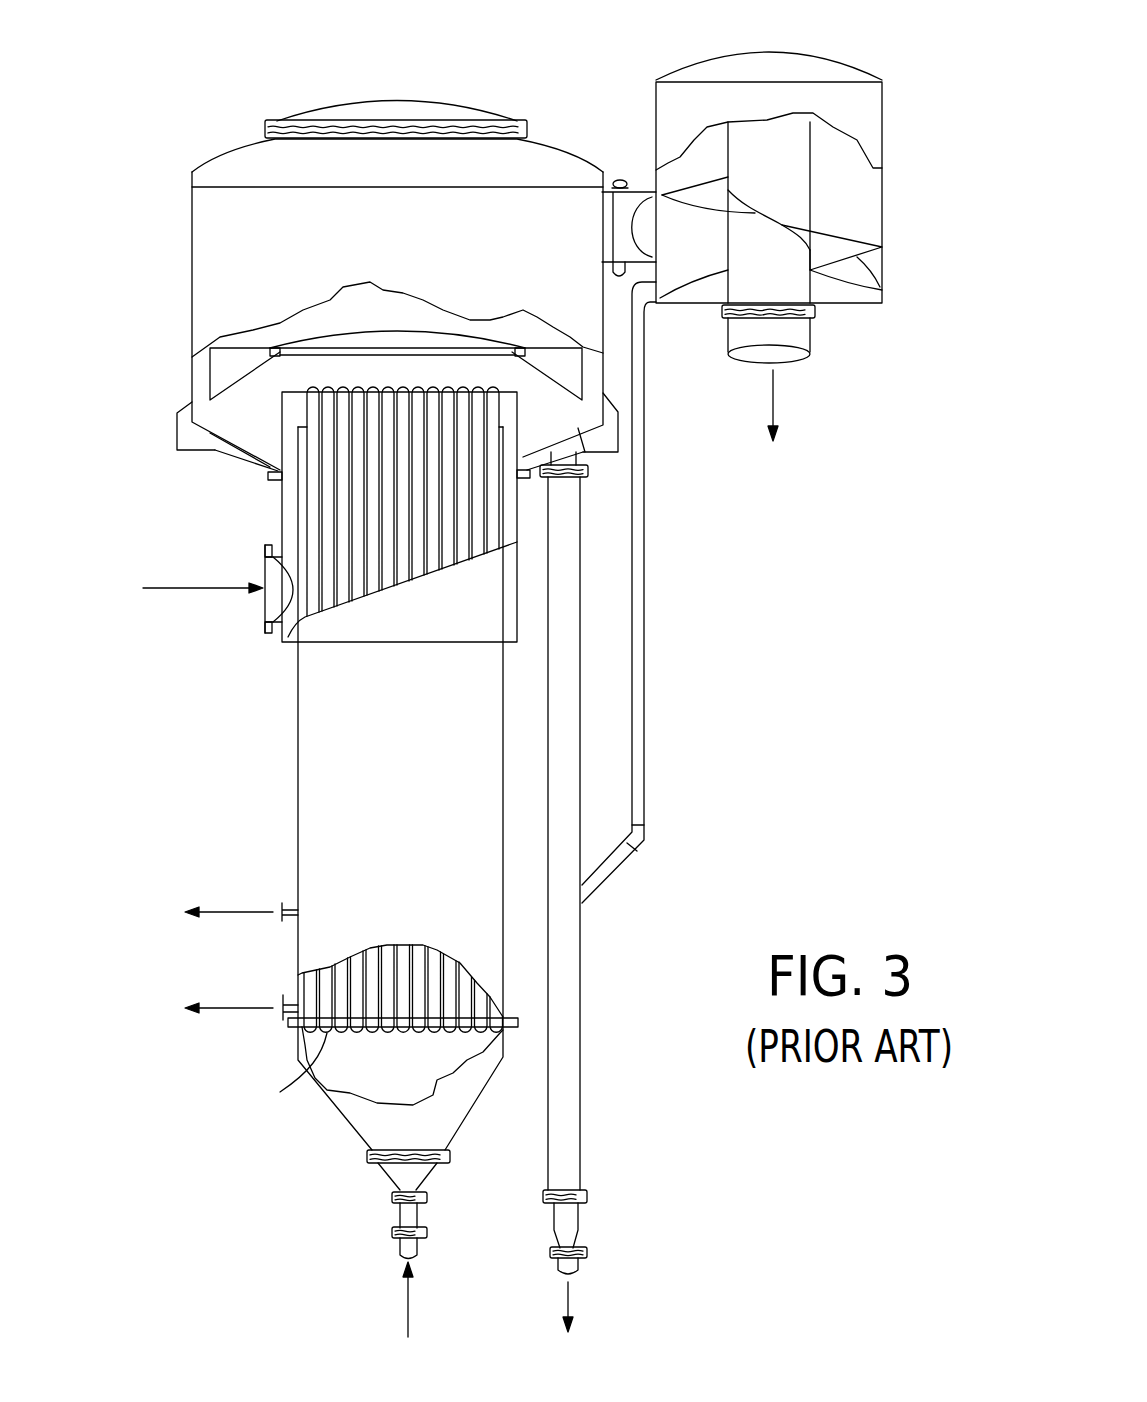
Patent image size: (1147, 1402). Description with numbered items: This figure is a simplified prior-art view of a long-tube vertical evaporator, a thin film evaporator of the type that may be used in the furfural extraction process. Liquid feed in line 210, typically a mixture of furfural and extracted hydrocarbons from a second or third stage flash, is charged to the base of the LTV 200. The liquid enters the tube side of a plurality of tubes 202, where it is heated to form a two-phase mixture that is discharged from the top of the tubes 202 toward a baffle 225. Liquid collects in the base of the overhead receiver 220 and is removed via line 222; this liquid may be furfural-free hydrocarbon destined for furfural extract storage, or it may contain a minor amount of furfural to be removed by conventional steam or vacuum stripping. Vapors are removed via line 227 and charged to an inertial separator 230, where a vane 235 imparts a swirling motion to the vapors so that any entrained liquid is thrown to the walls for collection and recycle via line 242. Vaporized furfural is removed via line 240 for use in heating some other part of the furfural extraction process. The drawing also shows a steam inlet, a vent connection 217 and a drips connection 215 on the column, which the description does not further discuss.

The long-tube vertical evaporator 200 is at (298, 822).
The tubes 202 is at (375, 1030).
The liquid feed line 210 is at (212, 590).
The drips outlet 215 is at (227, 1010).
The vent 217 is at (227, 913).
The overhead receiver 220 is at (192, 258).
The liquid removal line 222 is at (582, 665).
The baffle 225 is at (418, 333).
The vapor line 227 is at (642, 188).
The inertial separator 230 is at (882, 203).
The vane 235 is at (882, 280).
The vaporized furfural line 240 is at (813, 335).
The recycle line 242 is at (645, 413).